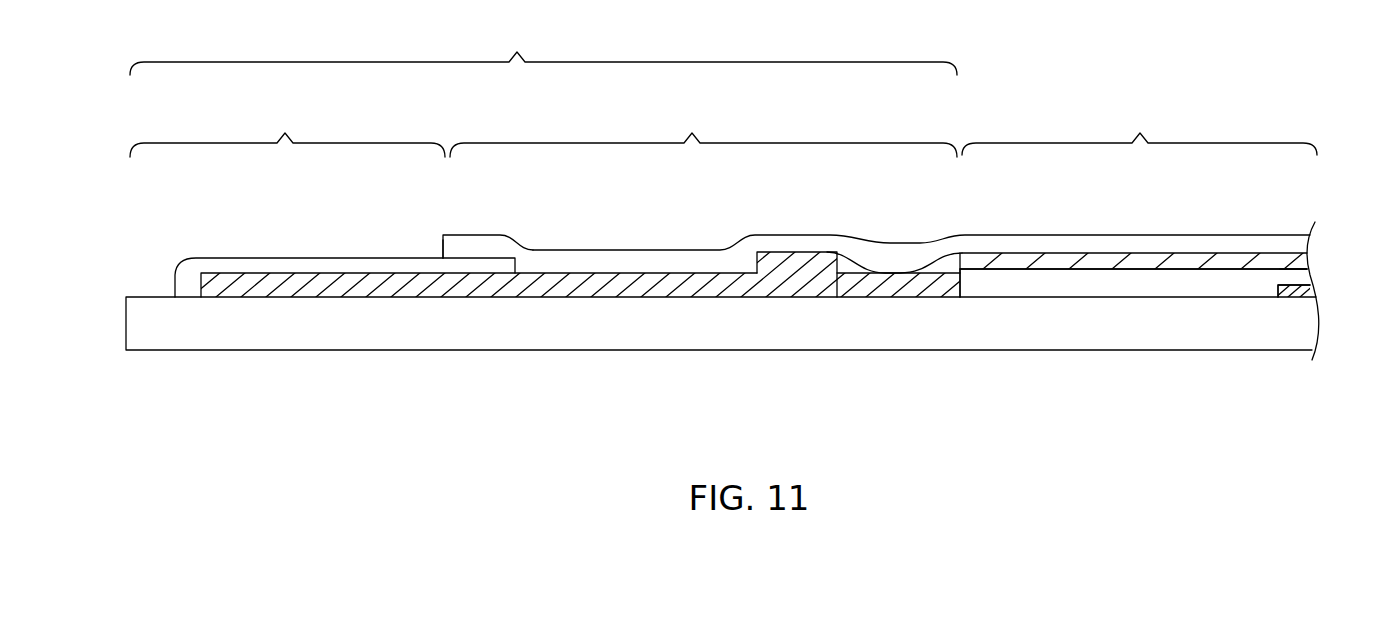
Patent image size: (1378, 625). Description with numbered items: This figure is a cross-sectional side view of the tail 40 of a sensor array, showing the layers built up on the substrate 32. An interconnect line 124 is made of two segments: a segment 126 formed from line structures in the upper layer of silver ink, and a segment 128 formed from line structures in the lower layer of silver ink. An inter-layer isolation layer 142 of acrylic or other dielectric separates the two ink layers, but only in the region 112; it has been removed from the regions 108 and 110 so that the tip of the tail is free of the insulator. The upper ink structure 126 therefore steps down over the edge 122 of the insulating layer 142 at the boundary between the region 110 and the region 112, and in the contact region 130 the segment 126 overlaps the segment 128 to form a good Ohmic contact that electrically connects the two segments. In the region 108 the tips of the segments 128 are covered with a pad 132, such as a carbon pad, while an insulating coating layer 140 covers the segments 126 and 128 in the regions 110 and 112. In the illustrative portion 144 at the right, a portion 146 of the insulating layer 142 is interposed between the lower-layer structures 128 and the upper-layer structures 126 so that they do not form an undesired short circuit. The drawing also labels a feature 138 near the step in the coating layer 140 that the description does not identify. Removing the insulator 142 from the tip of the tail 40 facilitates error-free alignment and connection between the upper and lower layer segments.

The substrate 32 is at (632, 330).
The tail 40 is at (478, 402).
The region 108 is at (287, 133).
The region 110 is at (703, 133).
The region 112 is at (1139, 132).
The edge 122 is at (957, 281).
The line 124 is at (856, 224).
The segment 126 is at (1038, 258).
The segment 128 is at (678, 288).
The contact region 130 is at (837, 303).
The pad 132 is at (265, 265).
The step 138 is at (440, 245).
The insulating coating layer 140 is at (478, 242).
The inter-layer isolation layer 142 is at (1018, 285).
The portion 144 is at (1280, 307).
The portion 146 is at (1300, 272).